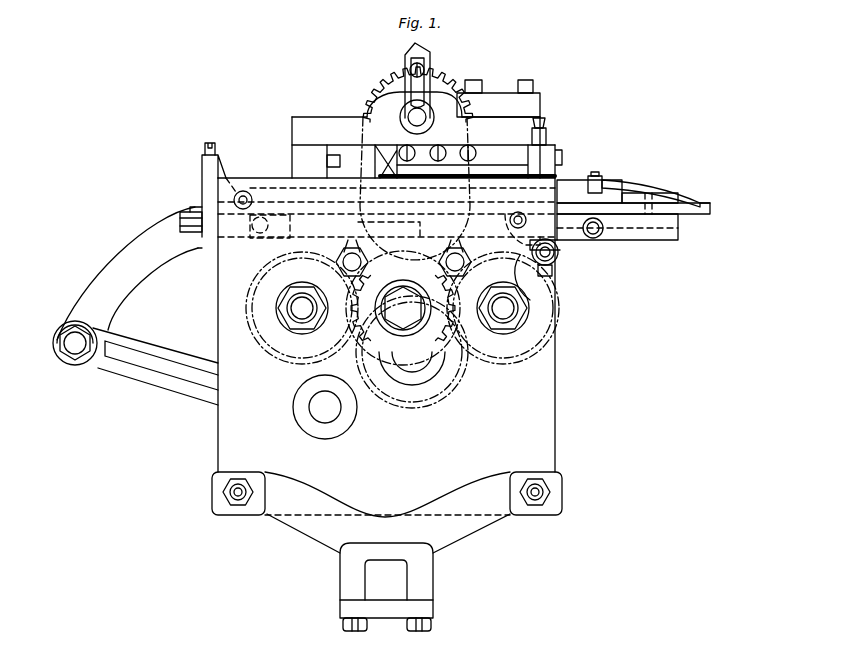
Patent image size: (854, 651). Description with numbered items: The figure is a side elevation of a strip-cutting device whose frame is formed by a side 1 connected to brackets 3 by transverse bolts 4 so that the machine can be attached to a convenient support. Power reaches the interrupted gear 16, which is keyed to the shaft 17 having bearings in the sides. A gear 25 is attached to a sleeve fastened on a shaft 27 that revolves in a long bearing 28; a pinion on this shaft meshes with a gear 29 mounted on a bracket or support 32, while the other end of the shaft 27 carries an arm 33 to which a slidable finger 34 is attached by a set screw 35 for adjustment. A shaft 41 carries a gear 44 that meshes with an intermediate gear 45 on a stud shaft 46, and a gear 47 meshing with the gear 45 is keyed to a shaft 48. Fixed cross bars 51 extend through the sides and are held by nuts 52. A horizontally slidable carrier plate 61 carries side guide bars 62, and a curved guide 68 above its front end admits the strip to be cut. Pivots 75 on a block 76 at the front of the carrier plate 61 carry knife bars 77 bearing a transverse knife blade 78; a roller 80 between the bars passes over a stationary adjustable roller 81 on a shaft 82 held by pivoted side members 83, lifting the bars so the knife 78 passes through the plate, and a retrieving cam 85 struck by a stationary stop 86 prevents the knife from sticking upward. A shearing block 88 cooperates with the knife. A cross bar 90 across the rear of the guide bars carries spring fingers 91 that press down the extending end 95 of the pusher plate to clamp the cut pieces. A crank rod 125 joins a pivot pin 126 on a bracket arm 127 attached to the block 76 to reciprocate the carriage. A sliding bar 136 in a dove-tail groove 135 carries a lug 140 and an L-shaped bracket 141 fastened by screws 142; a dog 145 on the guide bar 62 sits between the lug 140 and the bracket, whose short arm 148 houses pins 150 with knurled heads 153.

The side plate 1 is at (556, 410).
The bracket 3 is at (325, 532).
The transverse bolt 4 is at (237, 500).
The interrupted gear 16 is at (450, 385).
The shaft 17 is at (410, 325).
The gear 25 is at (370, 104).
The shaft 27 is at (430, 122).
The long bearing 28 is at (408, 124).
The gear 29 is at (460, 86).
The bracket or support 32 is at (530, 95).
The arm 33 is at (395, 72).
The slidable finger 34 is at (420, 56).
The set screw 35 is at (426, 72).
The shaft 41 is at (532, 312).
The gear 44 is at (548, 318).
The intermediate gear 45 is at (372, 345).
The stud shaft 46 is at (418, 298).
The gear 47 is at (300, 350).
The shaft 48 is at (290, 318).
The fixed cross bar 51 is at (362, 262).
The nut 52 is at (348, 252).
The carrier plate 61 is at (710, 208).
The side guide bar 62 is at (575, 188).
The curved guide 68 is at (222, 160).
The pivot 75 is at (255, 236).
The block 76 is at (195, 233).
The knife bar 77 is at (625, 240).
The transverse knife blade 78 is at (678, 230).
The roller 80 is at (600, 240).
The stationary adjustable roller 81 is at (558, 254).
The shaft 82 is at (553, 270).
The side member 83 is at (510, 255).
The retrieving cam 85 is at (530, 190).
The stationary stop 86 is at (583, 228).
The shearing block 88 is at (645, 195).
The cross bar 90 is at (600, 178).
The spring finger 91 is at (657, 190).
The extending end of pusher plate 95 is at (685, 198).
The crank rod 125 is at (165, 385).
The pivot pin 126 is at (70, 352).
The bracket arm 127 is at (100, 262).
The dove-tail groove 135 is at (292, 152).
The horizontally sliding bar 136 is at (352, 144).
The lug 140 is at (327, 160).
The L-shaped bracket 141 is at (492, 150).
The screw 142 is at (470, 145).
The dog 145 is at (378, 162).
The short arm 148 is at (528, 160).
The pin 150 is at (558, 165).
The knurled head 153 is at (546, 122).